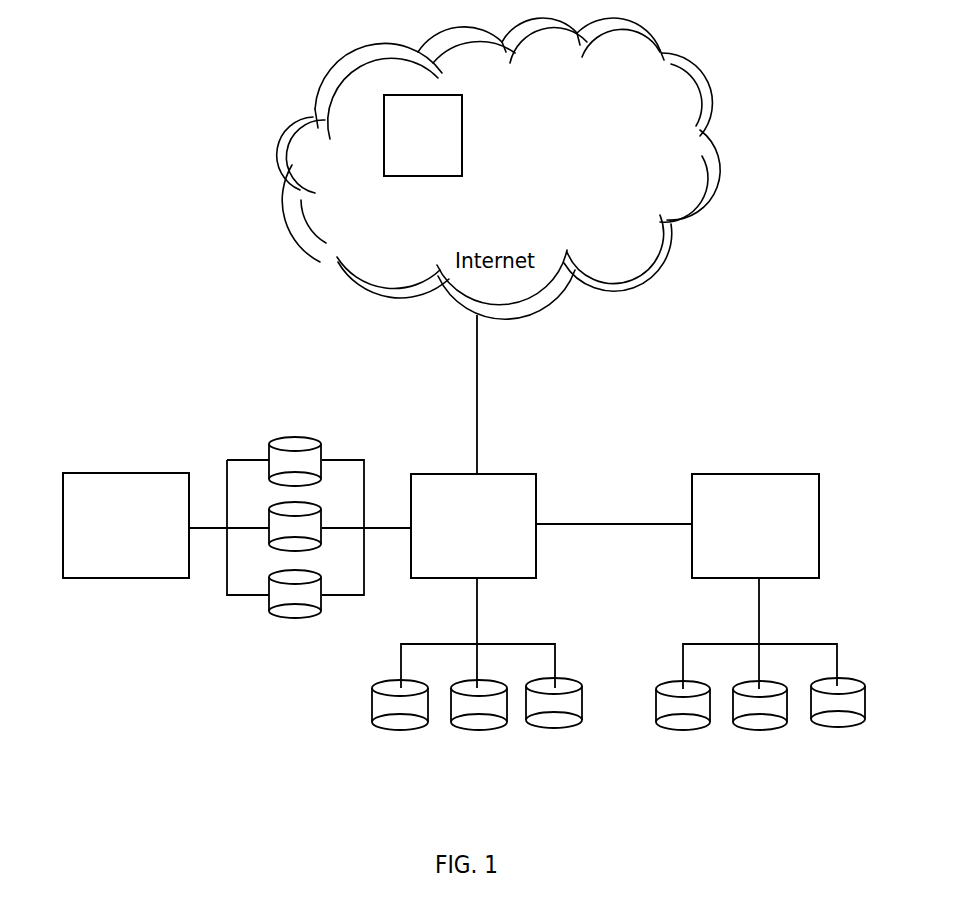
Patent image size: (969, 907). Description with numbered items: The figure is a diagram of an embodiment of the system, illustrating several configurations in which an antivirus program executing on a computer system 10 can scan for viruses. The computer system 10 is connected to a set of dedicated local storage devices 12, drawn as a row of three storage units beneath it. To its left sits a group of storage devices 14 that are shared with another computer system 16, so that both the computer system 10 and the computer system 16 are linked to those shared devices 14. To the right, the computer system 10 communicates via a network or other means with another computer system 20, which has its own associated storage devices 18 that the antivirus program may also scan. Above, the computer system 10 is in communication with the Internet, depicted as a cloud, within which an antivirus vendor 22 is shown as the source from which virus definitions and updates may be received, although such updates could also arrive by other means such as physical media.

The computer system 10 is at (420, 578).
The dedicated local storage devices 12 is at (393, 730).
The shared storage devices 14 is at (270, 467).
The another computer system 16 is at (75, 579).
The storage devices associated with another computer system 18 is at (675, 730).
The another computer system 20 is at (700, 578).
The antivirus vendor 22 is at (393, 177).